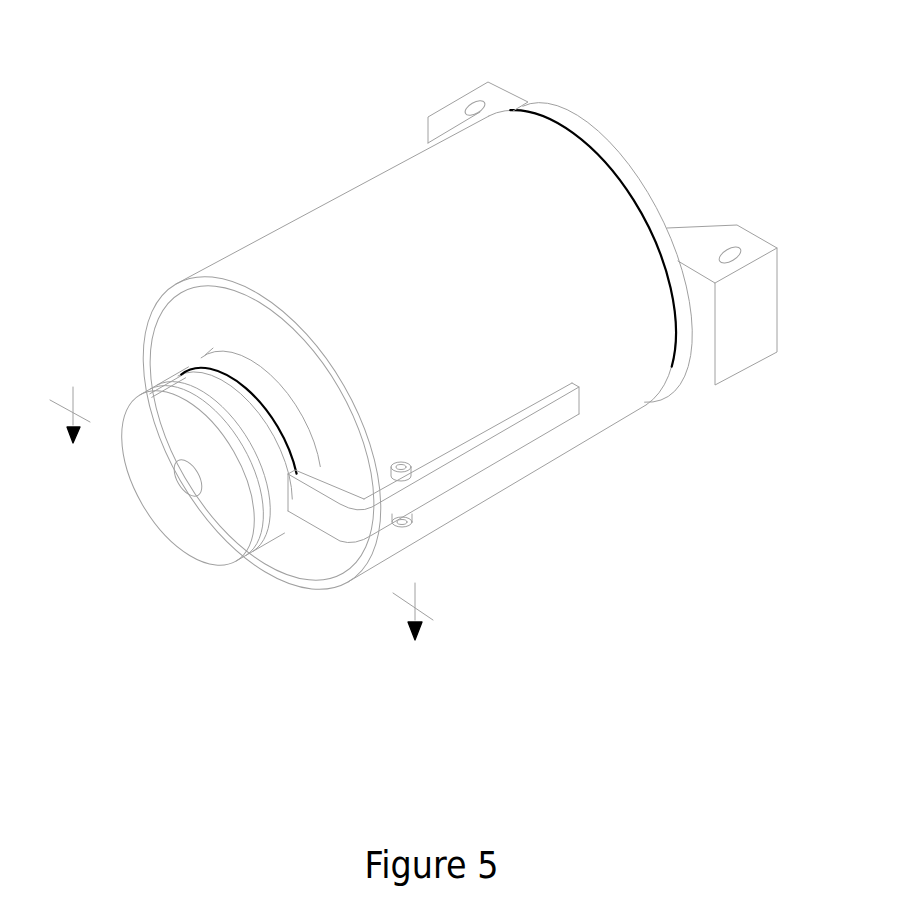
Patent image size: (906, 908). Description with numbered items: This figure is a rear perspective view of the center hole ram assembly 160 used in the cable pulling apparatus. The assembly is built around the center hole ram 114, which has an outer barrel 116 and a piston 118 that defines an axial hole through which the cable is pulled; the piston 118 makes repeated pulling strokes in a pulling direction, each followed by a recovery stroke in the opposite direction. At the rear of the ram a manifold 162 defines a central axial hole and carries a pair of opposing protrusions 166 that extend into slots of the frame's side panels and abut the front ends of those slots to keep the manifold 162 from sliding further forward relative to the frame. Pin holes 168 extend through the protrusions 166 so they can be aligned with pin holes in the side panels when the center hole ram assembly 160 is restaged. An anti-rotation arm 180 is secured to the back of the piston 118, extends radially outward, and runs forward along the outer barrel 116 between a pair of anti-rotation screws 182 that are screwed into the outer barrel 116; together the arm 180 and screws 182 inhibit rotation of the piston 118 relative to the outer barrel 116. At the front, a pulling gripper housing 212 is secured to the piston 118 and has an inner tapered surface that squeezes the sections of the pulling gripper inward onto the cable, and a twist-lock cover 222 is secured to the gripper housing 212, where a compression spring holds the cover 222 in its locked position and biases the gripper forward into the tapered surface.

The center hole ram 114 is at (350, 186).
The outer barrel 116 is at (300, 228).
The piston 118 is at (280, 390).
The center hole ram assembly 160 is at (617, 607).
The manifold 162 is at (607, 143).
The protrusions 166 is at (700, 240).
The pin holes 168 is at (472, 108).
The anti-rotation arm 180 is at (535, 438).
The anti-rotation screws 182 is at (410, 472).
The pulling gripper housing 212 is at (143, 358).
The cover 222 is at (183, 557).